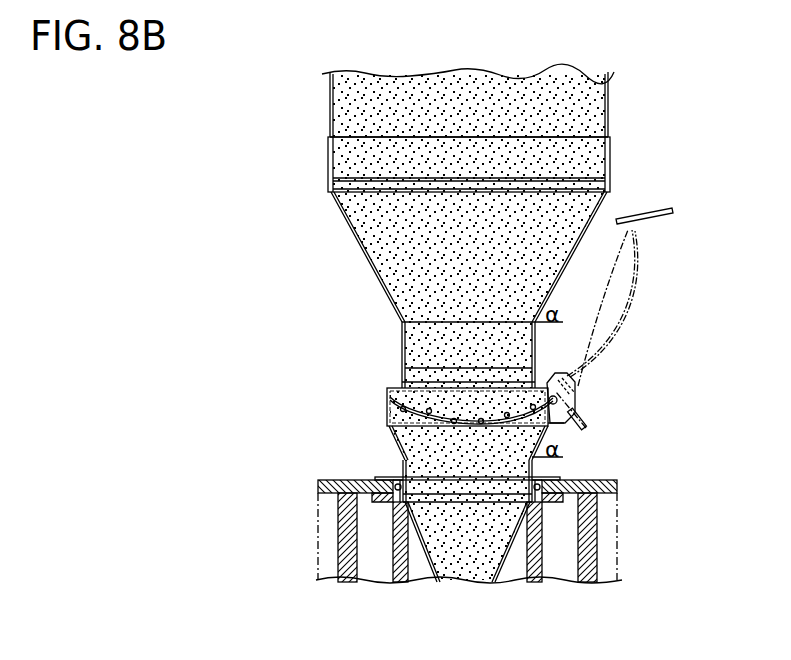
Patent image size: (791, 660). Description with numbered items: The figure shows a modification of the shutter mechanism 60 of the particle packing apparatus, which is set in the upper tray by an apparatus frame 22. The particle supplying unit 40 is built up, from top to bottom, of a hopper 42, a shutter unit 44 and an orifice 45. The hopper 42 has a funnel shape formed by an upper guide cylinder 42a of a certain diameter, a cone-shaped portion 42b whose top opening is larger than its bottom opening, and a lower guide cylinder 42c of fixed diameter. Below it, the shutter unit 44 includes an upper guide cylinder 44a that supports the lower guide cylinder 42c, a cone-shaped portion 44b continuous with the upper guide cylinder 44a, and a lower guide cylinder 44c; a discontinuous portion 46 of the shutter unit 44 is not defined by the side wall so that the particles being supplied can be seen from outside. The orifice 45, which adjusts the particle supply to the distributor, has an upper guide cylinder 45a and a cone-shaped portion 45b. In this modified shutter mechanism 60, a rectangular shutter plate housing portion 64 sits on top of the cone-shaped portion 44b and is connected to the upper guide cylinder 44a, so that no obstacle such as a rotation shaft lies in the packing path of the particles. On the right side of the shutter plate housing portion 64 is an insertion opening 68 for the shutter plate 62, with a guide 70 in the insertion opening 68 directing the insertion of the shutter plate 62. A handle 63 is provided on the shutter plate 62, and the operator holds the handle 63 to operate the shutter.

The apparatus frame 22 is at (598, 480).
The particle supplying unit 40 is at (153, 142).
The hopper 42 is at (209, 273).
The upper guide cylinder 42a is at (330, 113).
The cone-shaped portion 42b is at (347, 227).
The lower guide cylinder 42c is at (402, 340).
The shutter unit 44 is at (210, 388).
The upper guide cylinder 44a is at (383, 400).
The cone-shaped portion 44b is at (407, 442).
The lower guide cylinder 44c is at (403, 467).
The orifice 45 is at (210, 522).
The upper guide cylinder 45a is at (393, 498).
The cone-shaped portion 45b is at (425, 557).
The discontinuous portion 46 is at (356, 372).
The shutter mechanism 60 is at (628, 386).
The shutter plate 62 is at (633, 282).
The handle 63 is at (650, 212).
The shutter plate housing portion 64 is at (387, 418).
The insertion opening 68 is at (564, 385).
The guide 70 is at (562, 389).